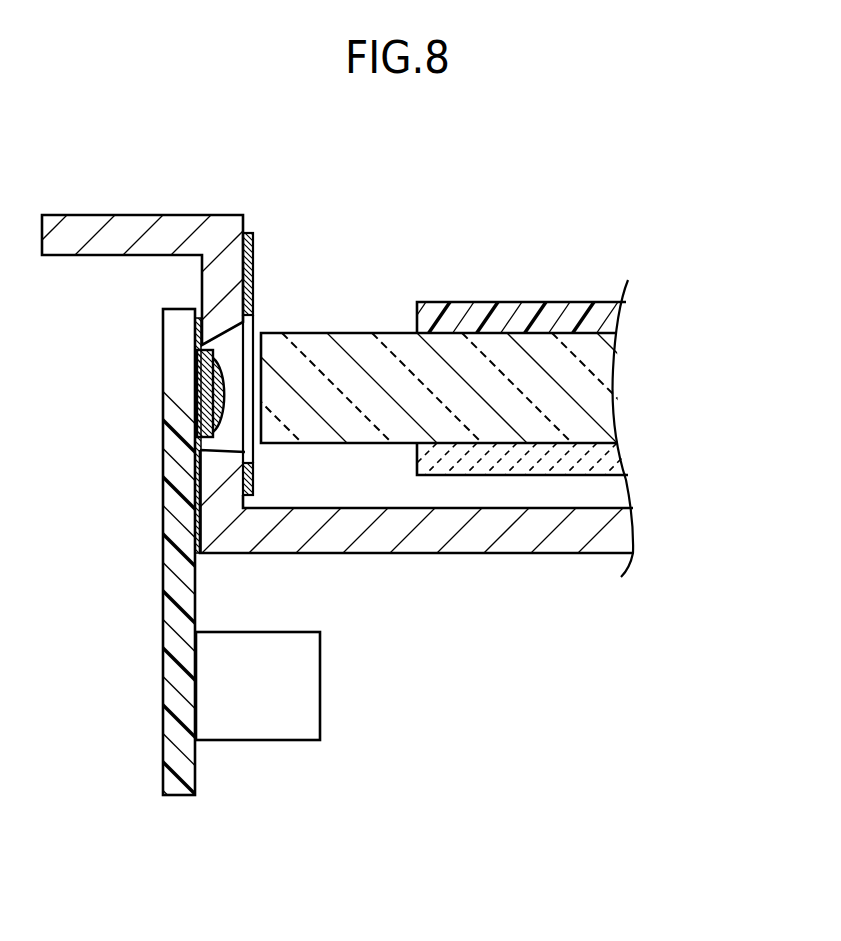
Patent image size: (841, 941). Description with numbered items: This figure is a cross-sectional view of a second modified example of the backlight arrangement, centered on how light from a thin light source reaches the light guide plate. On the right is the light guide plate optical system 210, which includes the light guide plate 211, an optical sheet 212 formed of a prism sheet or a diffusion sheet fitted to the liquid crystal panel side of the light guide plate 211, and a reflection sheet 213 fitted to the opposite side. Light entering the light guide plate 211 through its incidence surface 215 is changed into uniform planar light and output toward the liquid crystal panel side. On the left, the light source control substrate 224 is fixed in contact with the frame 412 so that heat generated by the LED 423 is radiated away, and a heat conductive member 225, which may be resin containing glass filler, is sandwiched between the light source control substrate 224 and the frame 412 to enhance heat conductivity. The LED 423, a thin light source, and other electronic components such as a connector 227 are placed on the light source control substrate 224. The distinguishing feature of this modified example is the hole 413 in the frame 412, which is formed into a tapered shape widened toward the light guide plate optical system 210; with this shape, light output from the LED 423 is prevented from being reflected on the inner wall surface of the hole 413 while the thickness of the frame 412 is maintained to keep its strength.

The light guide plate optical system 210 is at (427, 382).
The light guide plate 211 is at (614, 405).
The optical sheet 212 is at (617, 315).
The reflection sheet 213 is at (620, 460).
The incidence surface 215 is at (255, 346).
The light source control substrate 224 is at (165, 463).
The heat conductive member 225 is at (200, 533).
The connector 227 is at (247, 242).
The frame 412 is at (467, 547).
The hole 413 is at (253, 454).
The LED 423 is at (217, 372).